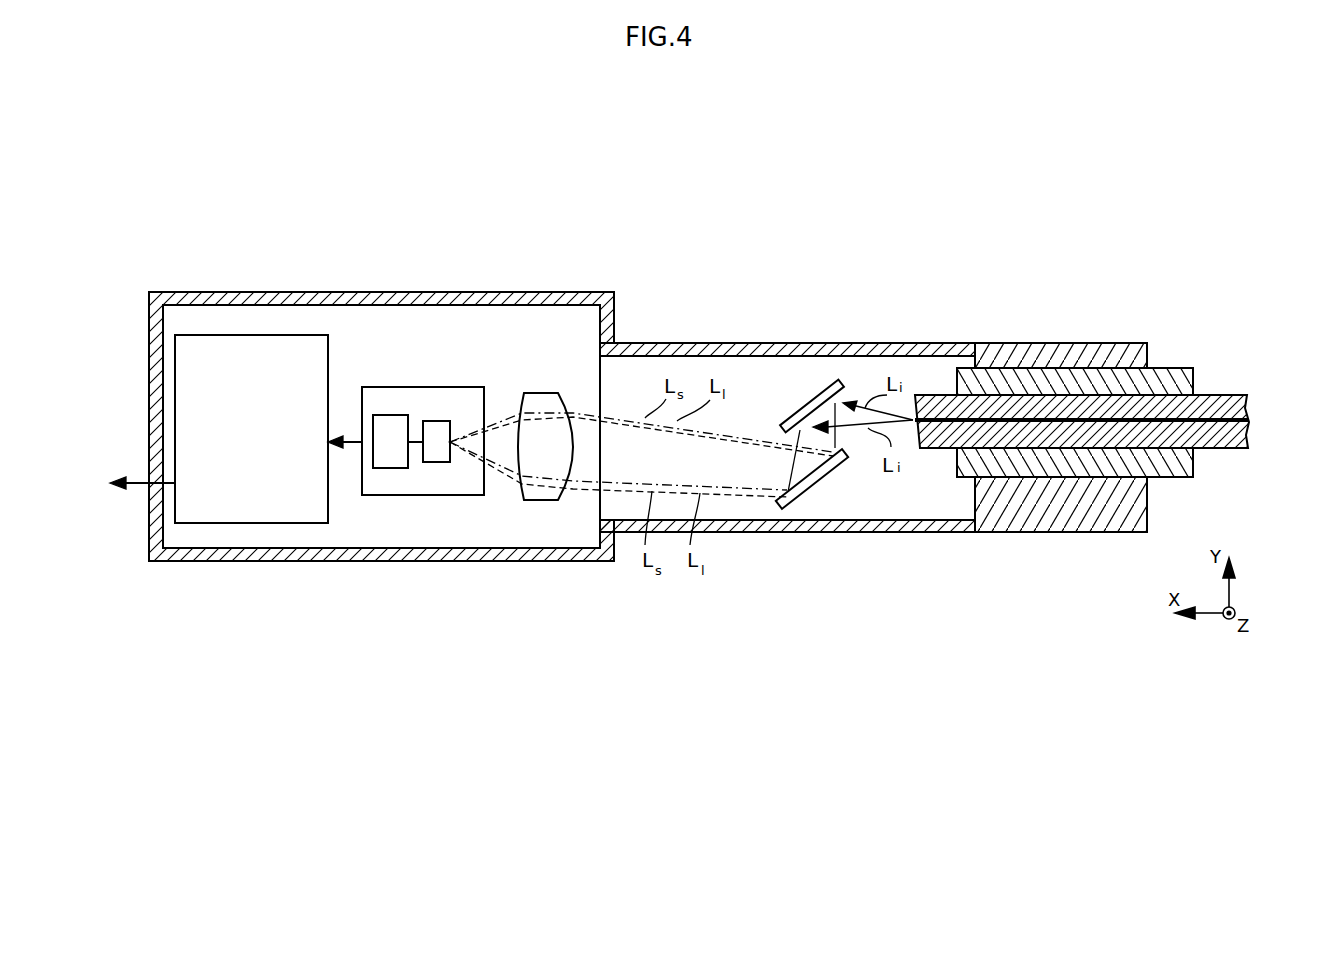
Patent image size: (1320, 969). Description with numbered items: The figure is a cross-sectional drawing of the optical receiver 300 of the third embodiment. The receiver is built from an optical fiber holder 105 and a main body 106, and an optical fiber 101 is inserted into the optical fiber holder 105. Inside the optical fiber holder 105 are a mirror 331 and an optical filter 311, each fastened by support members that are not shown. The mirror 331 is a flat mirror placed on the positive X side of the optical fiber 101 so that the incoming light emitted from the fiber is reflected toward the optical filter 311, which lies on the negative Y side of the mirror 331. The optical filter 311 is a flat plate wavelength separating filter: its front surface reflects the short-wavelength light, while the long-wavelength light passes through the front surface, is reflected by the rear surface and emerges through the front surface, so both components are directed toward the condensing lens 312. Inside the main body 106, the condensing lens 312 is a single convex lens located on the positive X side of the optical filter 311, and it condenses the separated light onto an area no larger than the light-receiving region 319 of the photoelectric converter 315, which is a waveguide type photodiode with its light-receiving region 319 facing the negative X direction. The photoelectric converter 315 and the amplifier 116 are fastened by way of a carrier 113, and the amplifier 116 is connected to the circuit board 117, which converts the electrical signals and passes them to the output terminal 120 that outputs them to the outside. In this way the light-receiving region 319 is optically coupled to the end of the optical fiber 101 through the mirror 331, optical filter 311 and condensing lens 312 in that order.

The optical receiver 300 is at (1124, 167).
The optical fiber 101 is at (1207, 395).
The optical fiber holder 105 is at (1097, 343).
The main body 106 is at (172, 292).
The circuit board 117 is at (253, 335).
The output terminal 120 is at (140, 487).
The amplifier 116 is at (386, 387).
The photoelectric converter 315 is at (390, 415).
The light-receiving region 319 is at (437, 421).
The carrier 113 is at (452, 440).
The condensing lens 312 is at (543, 393).
The mirror 331 is at (826, 383).
The optical filter 311 is at (808, 508).